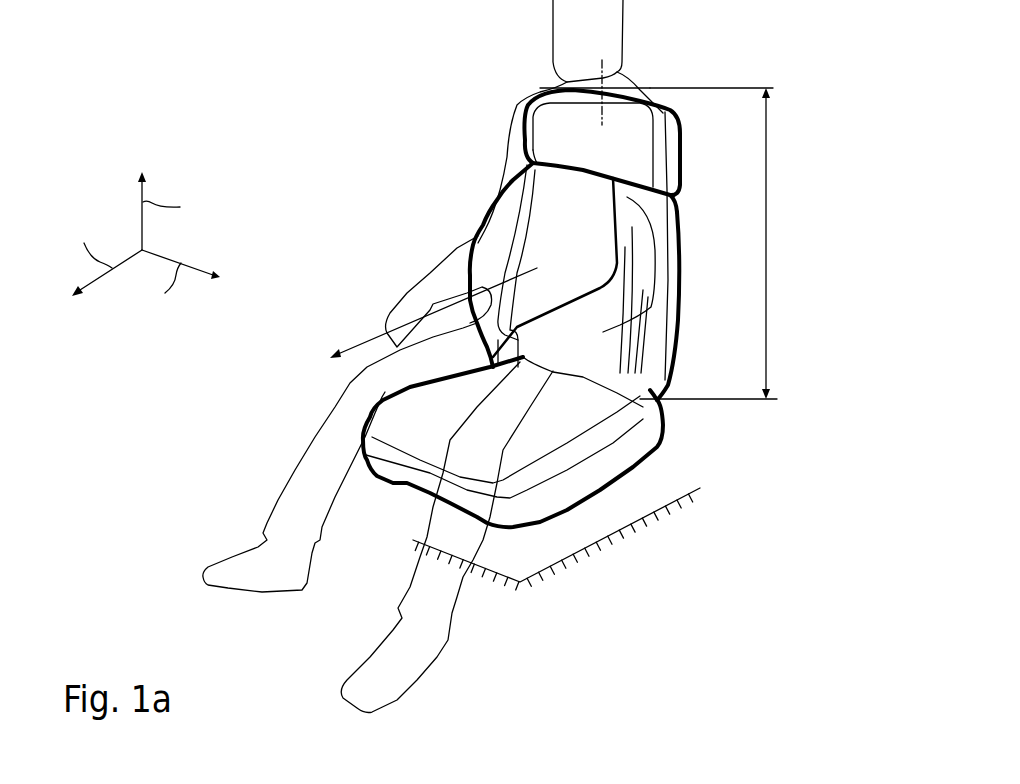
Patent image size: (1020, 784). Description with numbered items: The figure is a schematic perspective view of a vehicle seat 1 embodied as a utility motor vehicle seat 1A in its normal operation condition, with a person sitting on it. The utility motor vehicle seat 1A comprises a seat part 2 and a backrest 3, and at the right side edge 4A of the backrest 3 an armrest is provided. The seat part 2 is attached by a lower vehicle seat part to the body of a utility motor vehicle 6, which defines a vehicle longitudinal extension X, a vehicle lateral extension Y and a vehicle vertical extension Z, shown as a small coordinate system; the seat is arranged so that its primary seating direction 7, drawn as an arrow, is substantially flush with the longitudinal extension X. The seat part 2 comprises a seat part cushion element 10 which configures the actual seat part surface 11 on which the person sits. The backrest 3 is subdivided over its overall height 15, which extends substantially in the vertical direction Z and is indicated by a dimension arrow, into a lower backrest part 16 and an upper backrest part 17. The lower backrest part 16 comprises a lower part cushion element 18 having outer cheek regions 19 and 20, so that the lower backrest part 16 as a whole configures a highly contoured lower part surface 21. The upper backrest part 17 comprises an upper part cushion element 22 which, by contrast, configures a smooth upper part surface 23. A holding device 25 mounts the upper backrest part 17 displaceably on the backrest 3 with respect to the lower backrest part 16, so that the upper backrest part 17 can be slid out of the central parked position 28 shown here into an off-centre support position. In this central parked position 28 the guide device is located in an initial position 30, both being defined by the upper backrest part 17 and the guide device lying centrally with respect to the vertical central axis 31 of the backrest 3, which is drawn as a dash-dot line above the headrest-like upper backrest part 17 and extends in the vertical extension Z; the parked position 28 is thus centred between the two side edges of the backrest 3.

The vehicle seat 1 is at (815, 98).
The utility motor vehicle seat 1A is at (262, 156).
The seat part 2 is at (306, 419).
The backrest 3 is at (802, 304).
The right side edge 4A is at (666, 329).
The utility motor vehicle 6 is at (703, 489).
The primary seating direction 7 is at (484, 288).
The seat part cushion element 10 is at (390, 477).
The seat part surface 11 is at (432, 428).
The overall height 15 is at (767, 350).
The lower backrest part 16 is at (663, 290).
The upper backrest part 17 is at (648, 141).
The lower part cushion element 18 is at (553, 223).
The outer cheek region 19 is at (488, 248).
The outer cheek region 20 is at (597, 353).
The lower part surface 21 is at (580, 262).
The upper part cushion element 22 is at (567, 100).
The upper part surface 23 is at (553, 148).
The holding device 25 is at (686, 200).
The central parked position 28 is at (708, 71).
The initial position 30 is at (534, 74).
The vertical central axis 31 is at (607, 79).